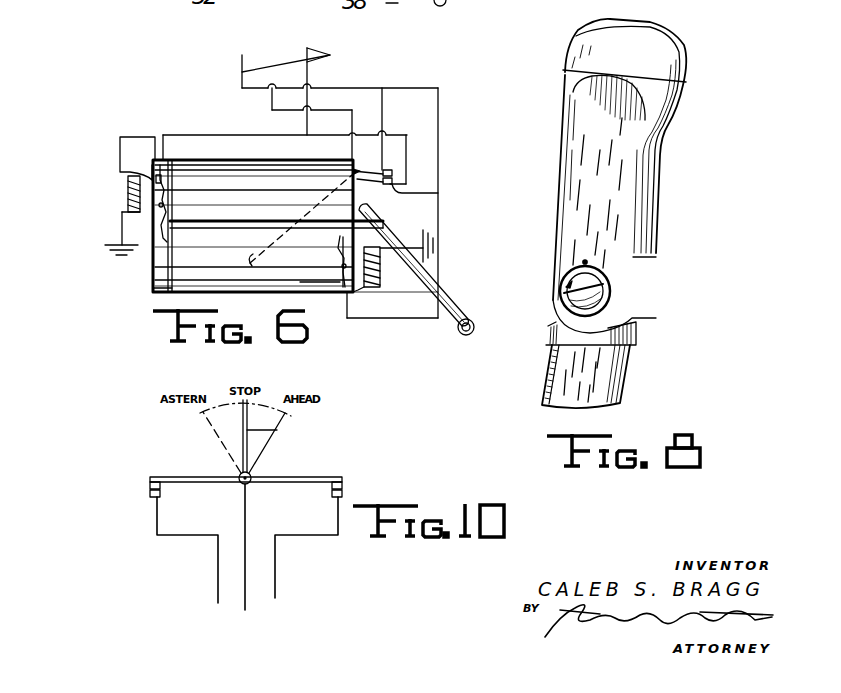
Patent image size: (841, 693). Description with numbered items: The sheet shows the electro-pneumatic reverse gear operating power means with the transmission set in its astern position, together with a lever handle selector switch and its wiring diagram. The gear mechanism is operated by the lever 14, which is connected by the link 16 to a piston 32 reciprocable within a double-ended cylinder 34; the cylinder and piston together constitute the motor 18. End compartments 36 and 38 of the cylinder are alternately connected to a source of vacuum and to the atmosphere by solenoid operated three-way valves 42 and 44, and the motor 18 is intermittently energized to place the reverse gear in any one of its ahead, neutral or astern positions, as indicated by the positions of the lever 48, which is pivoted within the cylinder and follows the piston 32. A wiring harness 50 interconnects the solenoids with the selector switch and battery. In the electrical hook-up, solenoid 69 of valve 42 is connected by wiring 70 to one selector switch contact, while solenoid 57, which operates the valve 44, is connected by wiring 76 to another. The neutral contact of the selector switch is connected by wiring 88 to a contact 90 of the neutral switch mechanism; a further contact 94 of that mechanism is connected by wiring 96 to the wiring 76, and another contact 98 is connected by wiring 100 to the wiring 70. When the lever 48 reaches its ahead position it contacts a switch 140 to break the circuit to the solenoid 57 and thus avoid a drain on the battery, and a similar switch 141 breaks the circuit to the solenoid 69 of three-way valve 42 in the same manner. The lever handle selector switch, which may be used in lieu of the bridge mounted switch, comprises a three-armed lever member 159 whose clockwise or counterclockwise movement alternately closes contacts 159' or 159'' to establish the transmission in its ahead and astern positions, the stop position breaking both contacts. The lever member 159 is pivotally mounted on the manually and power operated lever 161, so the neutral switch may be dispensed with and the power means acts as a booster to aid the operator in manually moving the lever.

In FIG. 6, the lever 14 is at (423, 278).
In FIG. 6, the link 16 is at (378, 224).
In FIG. 6, the motor 18 is at (212, 158).
In FIG. 6, the piston 32 is at (168, 262).
In FIG. 6, the double-ended cylinder 34 is at (153, 284).
In FIG. 6, the end compartment 36 is at (158, 255).
In FIG. 6, the end compartment 38 is at (313, 290).
In FIG. 6, the three-way valve 42 is at (128, 192).
In FIG. 6, the three-way valve 44 is at (377, 290).
In FIG. 6, the lever 48 is at (262, 248).
In FIG. 6, the wiring harness 50 is at (359, 70).
In FIG. 6, the solenoid 57 is at (378, 275).
In FIG. 6, the solenoid 69 is at (128, 182).
In FIG. 6, the wiring 70 is at (307, 124).
In FIG. 6, the wiring 76 is at (242, 55).
In FIG. 6, the wiring 88 is at (272, 92).
In FIG. 6, the contact 90 is at (392, 180).
In FIG. 6, the contact 94 is at (392, 172).
In FIG. 6, the wiring 96 is at (385, 110).
In FIG. 6, the contact 98 is at (438, 193).
In FIG. 6, the wiring 100 is at (397, 135).
In FIG. 6, the switch 140 is at (355, 293).
In FIG. 6, the switch 141 is at (122, 152).
In FIG. 8, the three-armed lever member 159 is at (635, 182).
In FIG. 10, the three-armed lever member 159 is at (250, 505).
In FIG. 10, the contact 159' is at (381, 479).
In FIG. 10, the contact 159'' is at (124, 517).
In FIG. 8, the manually and power operated lever 161 is at (605, 376).